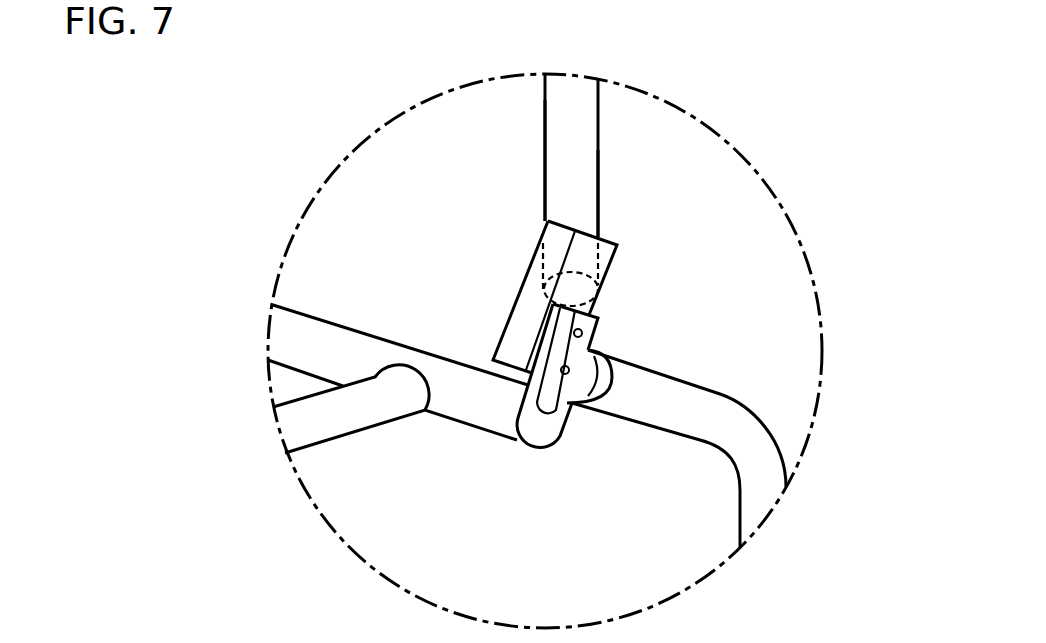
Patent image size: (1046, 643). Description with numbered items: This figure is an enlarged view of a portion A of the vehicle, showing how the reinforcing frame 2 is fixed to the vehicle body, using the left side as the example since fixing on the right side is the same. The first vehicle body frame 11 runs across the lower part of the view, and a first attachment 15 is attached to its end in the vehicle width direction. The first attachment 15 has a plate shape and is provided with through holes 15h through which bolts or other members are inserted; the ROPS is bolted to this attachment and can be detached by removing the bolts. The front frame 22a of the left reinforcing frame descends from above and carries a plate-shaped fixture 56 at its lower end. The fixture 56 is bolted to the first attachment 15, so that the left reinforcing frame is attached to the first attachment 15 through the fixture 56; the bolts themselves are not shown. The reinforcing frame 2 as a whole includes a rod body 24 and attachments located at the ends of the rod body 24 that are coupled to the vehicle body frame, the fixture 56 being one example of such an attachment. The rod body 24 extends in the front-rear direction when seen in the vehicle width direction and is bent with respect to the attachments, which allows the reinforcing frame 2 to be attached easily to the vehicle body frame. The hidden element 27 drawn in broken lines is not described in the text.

The portion A is at (753, 158).
The reinforcing frame 2 is at (598, 143).
The first vehicle body frame 11 is at (476, 415).
The first attachment 15 is at (550, 437).
The through hole 15h is at (569, 367).
The front frame 22a is at (597, 188).
The rod body 24 is at (553, 150).
The hidden bolt 27 is at (540, 252).
The fixture 56 is at (522, 325).